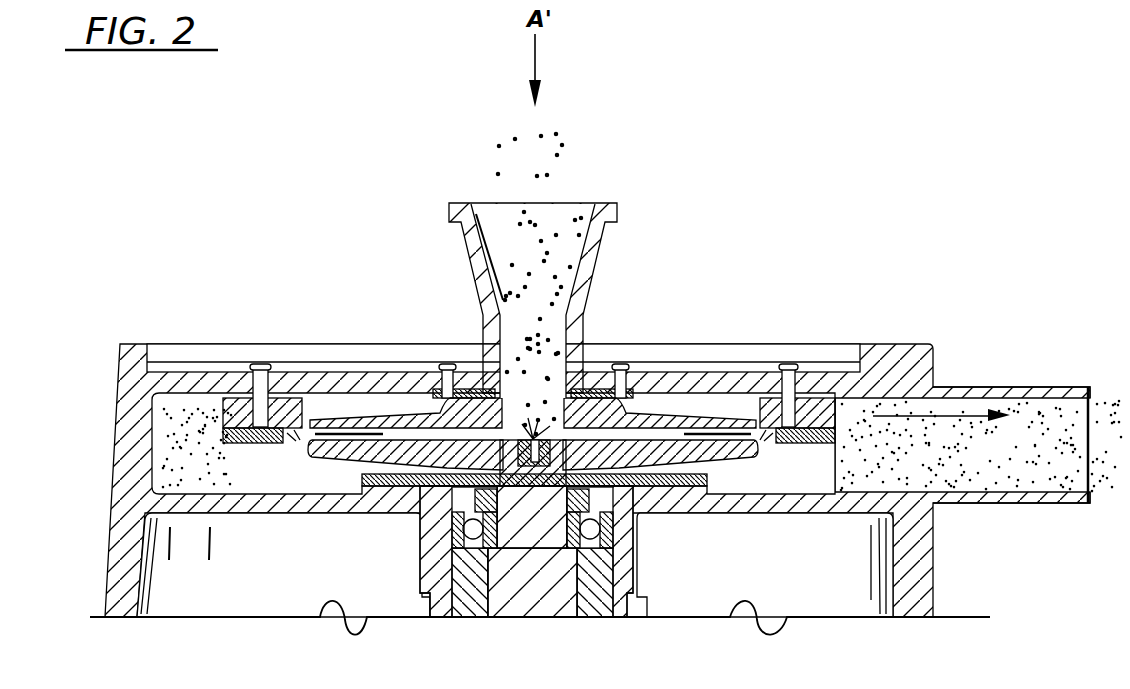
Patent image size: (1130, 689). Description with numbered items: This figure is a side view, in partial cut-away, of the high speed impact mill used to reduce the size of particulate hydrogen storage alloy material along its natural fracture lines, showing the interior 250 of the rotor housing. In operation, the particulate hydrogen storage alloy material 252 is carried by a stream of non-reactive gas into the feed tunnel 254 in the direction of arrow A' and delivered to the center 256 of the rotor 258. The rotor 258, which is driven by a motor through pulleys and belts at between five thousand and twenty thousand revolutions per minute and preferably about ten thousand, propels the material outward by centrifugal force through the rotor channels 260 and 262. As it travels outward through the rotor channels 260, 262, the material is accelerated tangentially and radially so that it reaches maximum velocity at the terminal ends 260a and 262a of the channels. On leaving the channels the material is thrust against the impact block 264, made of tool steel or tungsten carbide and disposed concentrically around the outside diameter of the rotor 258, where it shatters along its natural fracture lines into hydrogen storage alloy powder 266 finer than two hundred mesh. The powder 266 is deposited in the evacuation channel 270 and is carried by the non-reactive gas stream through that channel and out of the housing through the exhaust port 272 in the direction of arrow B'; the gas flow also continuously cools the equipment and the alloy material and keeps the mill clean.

The interior of rotor housing 250 is at (846, 252).
The particulate hydrogen storage alloy material 252 is at (562, 162).
The feed tunnel 254 is at (468, 278).
The center of rotor 256 is at (580, 362).
The rotor 258 is at (727, 440).
The rotor channel 260 is at (390, 435).
The terminal end of rotor channel 260a is at (298, 447).
The rotor channel 262 is at (688, 437).
The terminal end of rotor channel 262a is at (755, 444).
The impact block 264 is at (242, 410).
The hydrogen storage alloy powder 266 is at (177, 428).
The evacuation channel 270 is at (175, 448).
The exhaust port 272 is at (1002, 505).